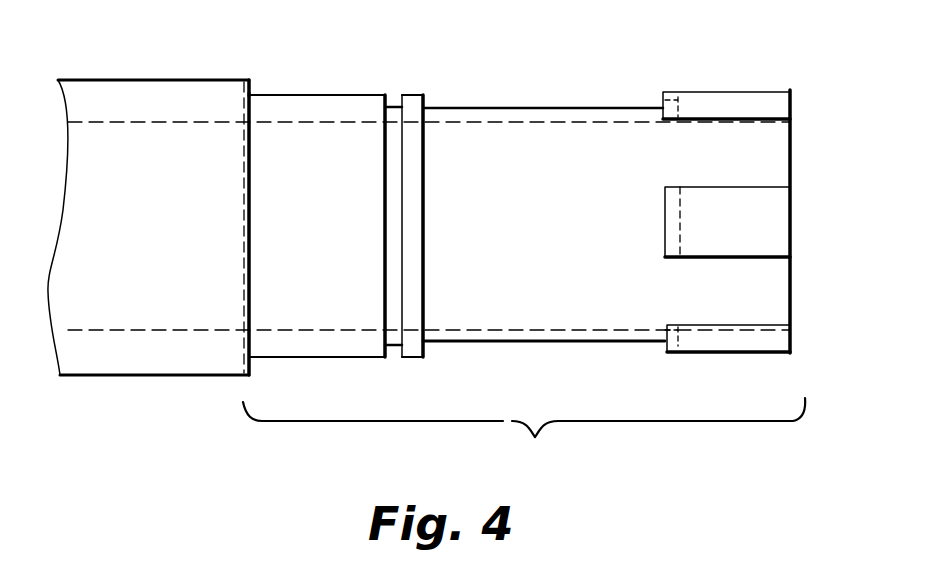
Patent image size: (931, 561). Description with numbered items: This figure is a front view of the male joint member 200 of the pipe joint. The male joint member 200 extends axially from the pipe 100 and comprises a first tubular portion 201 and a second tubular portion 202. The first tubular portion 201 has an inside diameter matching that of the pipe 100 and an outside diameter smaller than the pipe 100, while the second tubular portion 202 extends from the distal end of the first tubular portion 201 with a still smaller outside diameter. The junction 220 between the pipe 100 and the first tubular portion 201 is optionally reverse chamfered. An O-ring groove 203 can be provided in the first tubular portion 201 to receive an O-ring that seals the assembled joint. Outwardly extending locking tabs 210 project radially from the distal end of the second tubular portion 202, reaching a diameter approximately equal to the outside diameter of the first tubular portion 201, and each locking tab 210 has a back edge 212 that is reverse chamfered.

The pipe 100 is at (92, 78).
The male joint member 200 is at (554, 254).
The first tubular portion 201 is at (348, 345).
The second tubular portion 202 is at (619, 161).
The O-ring groove 203 is at (393, 106).
The locking tabs 210 is at (745, 103).
The back edge 212 is at (670, 105).
The junction 220 is at (250, 93).